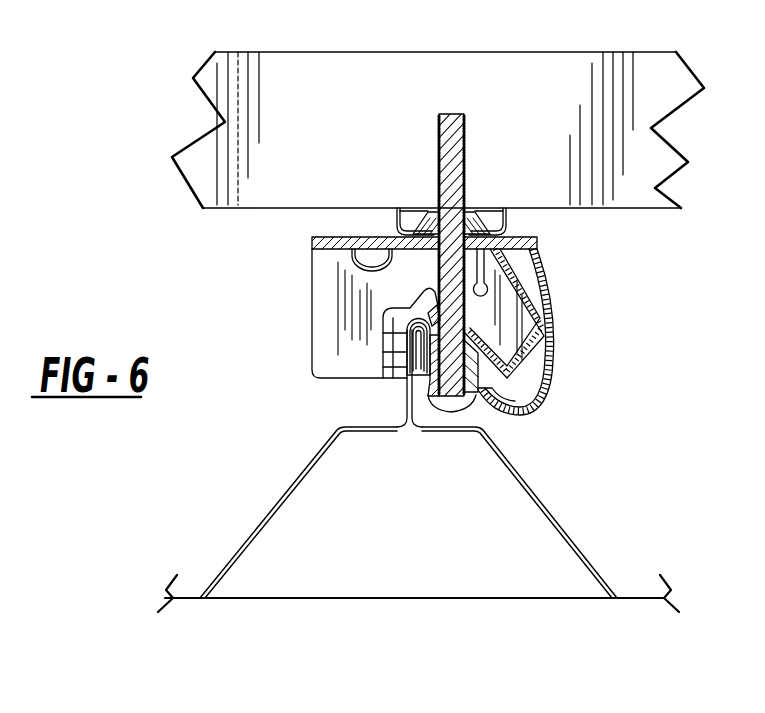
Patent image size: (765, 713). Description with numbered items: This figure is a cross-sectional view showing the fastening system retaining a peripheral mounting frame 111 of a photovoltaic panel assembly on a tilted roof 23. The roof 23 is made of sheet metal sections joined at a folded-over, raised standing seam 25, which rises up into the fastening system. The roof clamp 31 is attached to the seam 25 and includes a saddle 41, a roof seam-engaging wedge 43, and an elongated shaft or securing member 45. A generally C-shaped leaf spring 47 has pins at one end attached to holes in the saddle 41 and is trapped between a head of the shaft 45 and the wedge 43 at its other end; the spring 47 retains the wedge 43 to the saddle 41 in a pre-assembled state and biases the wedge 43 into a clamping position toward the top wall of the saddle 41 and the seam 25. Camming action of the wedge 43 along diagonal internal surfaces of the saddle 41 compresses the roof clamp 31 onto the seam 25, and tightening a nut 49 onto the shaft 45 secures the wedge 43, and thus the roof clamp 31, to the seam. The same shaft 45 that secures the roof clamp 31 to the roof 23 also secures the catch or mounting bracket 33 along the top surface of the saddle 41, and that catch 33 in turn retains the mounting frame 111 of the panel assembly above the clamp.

The peripheral mounting frame 111 is at (602, 5).
The catch or mounting bracket 33 is at (397, 214).
The nut 49 is at (592, 236).
The roof clamp 31 is at (228, 268).
The elongated shaft or securing member 45 is at (447, 291).
The saddle 41 is at (330, 318).
The standing seam 25 is at (417, 348).
The roof seam-engaging wedge 43 is at (433, 497).
The C-shaped leaf spring 47 is at (625, 318).
The tilted roof 23 is at (615, 472).